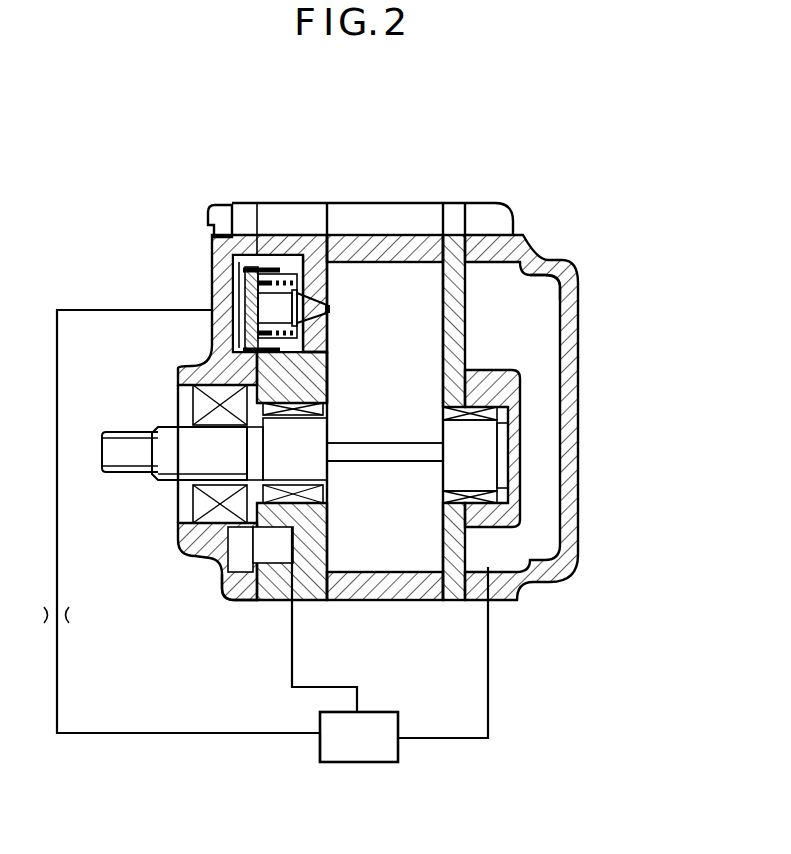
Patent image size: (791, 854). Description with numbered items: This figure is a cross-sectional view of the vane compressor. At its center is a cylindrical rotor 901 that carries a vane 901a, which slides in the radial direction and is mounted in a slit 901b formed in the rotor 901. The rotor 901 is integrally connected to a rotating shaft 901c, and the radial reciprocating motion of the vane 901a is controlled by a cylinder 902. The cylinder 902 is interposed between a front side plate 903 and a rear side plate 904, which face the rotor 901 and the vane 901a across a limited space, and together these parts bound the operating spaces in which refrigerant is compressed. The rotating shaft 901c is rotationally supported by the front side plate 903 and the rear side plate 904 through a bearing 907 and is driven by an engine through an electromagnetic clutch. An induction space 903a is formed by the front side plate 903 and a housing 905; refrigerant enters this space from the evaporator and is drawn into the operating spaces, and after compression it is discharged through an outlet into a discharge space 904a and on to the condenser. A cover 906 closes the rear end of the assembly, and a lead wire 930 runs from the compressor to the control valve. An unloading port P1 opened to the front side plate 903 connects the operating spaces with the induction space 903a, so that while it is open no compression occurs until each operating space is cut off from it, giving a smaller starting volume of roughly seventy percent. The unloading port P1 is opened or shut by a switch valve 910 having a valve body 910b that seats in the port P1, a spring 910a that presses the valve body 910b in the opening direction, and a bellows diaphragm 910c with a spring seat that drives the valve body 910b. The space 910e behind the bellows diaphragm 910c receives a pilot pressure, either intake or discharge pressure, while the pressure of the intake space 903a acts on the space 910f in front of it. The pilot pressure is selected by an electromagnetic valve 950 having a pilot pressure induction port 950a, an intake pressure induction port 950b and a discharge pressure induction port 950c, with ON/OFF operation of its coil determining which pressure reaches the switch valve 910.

The rotor 901 is at (432, 358).
The vane 901a is at (432, 455).
The slit 901b is at (385, 464).
The rotating shaft 901c is at (178, 443).
The cylinder 902 is at (412, 240).
The front side plate 903 is at (307, 224).
The induction space 903a is at (243, 560).
The rear side plate 904 is at (452, 267).
The discharge space 904a is at (542, 294).
The housing 905 is at (242, 236).
The cover 906 is at (522, 248).
The bearing 907 is at (493, 498).
The switch valve 910 is at (245, 289).
The spring 910a is at (322, 376).
The valve body 910b is at (318, 300).
The bellows diaphragm 910c is at (245, 341).
The space on the rear side of the bellows diaphragm 910e is at (238, 270).
The space on the front side of the bellows diaphragm 910f is at (312, 325).
The unloading port P1 is at (343, 300).
The lead wire 930 is at (158, 736).
The electromagnetic valve 950 is at (363, 762).
The pilot pressure induction port 950a is at (317, 742).
The intake pressure induction port 950b is at (365, 712).
The discharge pressure induction port 950c is at (405, 742).